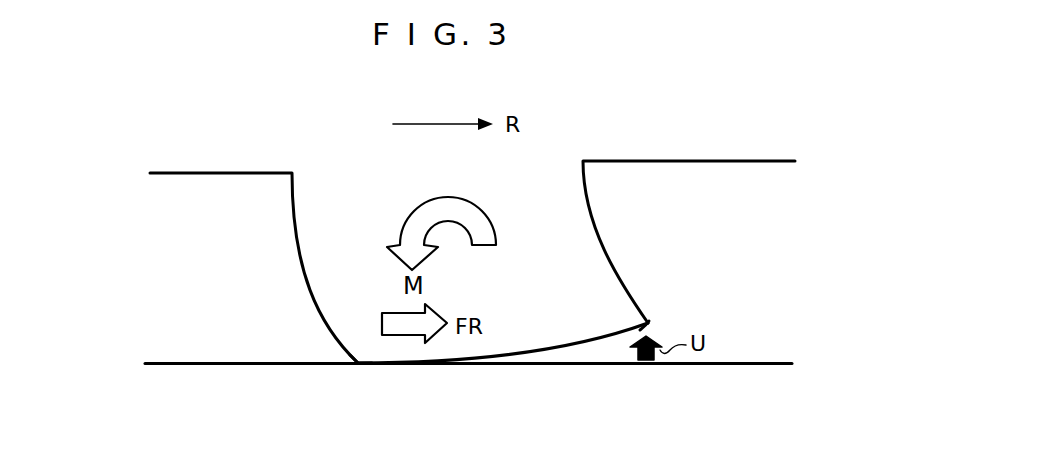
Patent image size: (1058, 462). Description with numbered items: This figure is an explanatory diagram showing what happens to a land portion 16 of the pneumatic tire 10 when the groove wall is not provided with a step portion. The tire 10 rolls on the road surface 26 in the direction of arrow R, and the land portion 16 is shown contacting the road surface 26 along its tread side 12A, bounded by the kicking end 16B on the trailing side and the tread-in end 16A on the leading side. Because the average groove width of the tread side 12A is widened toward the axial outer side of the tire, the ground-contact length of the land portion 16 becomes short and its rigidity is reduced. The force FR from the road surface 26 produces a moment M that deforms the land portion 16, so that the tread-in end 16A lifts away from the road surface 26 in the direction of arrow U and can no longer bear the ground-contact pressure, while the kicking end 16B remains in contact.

The pneumatic tire 10 is at (151, 214).
The tread side 12A is at (557, 353).
The land portion 16 is at (608, 247).
The tread-in end 16A is at (649, 323).
The kicking end 16B is at (367, 365).
The road surface 26 is at (758, 363).